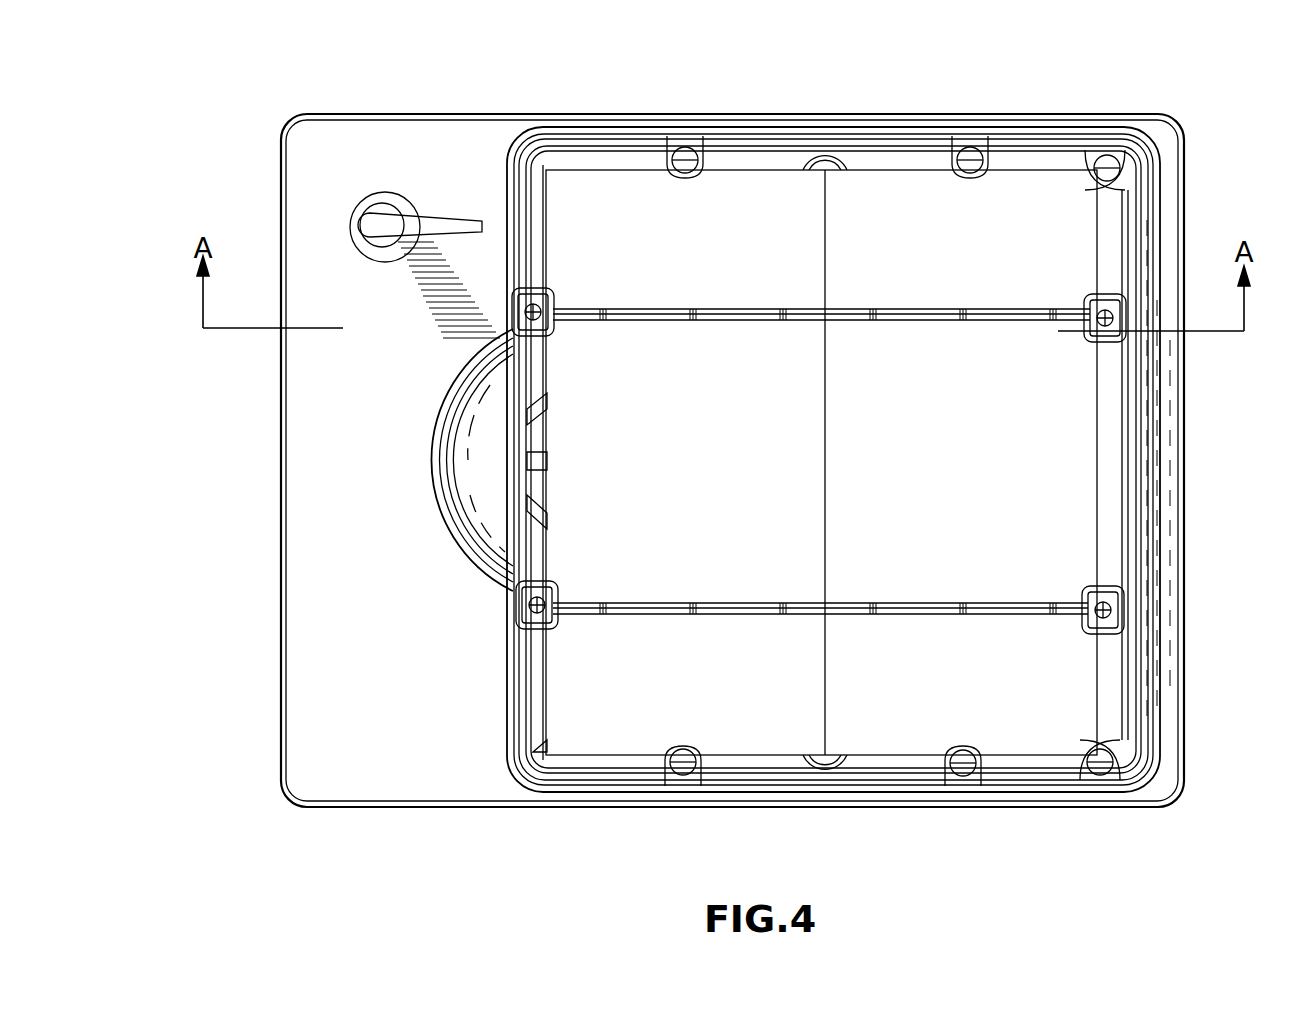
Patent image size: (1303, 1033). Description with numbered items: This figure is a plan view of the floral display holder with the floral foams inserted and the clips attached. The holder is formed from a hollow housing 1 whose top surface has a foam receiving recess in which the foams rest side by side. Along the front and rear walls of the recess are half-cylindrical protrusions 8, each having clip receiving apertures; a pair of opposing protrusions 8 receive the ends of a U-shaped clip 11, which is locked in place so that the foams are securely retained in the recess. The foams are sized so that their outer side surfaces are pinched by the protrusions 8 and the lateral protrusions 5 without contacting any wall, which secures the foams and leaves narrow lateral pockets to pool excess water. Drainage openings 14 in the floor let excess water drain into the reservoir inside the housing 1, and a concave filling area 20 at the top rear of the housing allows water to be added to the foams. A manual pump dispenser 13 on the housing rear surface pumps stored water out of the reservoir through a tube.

The housing 1 is at (1073, 83).
The lateral protrusions 5 is at (695, 147).
The half-cylindrical protrusions 8 is at (517, 603).
The U-shaped clips 11 is at (595, 612).
The manual pump dispenser 13 is at (398, 193).
The drainage openings 14 is at (685, 148).
The filling area 20 is at (485, 428).